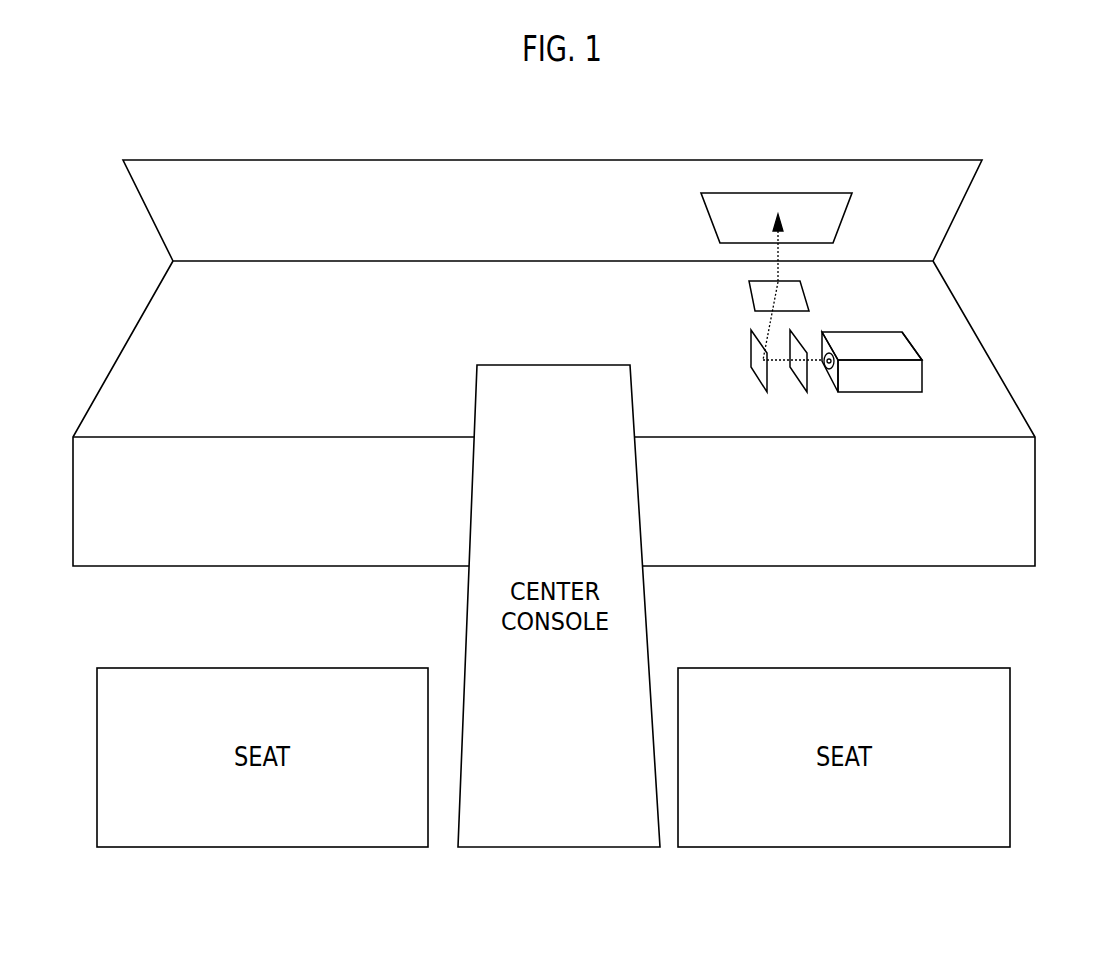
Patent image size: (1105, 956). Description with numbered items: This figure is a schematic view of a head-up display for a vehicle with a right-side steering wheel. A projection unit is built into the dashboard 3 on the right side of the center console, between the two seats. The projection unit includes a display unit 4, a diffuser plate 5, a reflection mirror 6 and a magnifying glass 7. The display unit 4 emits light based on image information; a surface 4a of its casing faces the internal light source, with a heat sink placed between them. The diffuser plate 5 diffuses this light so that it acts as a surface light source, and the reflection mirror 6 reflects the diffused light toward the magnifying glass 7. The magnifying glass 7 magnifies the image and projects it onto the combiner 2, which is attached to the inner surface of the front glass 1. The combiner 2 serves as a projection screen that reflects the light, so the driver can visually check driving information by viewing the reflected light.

The front glass 1 is at (945, 162).
The combiner 2 is at (818, 200).
The dashboard 3 is at (1030, 527).
The display unit 4 is at (931, 344).
The surface 4a is at (912, 350).
The diffuser plate 5 is at (807, 388).
The reflection mirror 6 is at (768, 378).
The magnifying glass 7 is at (795, 303).